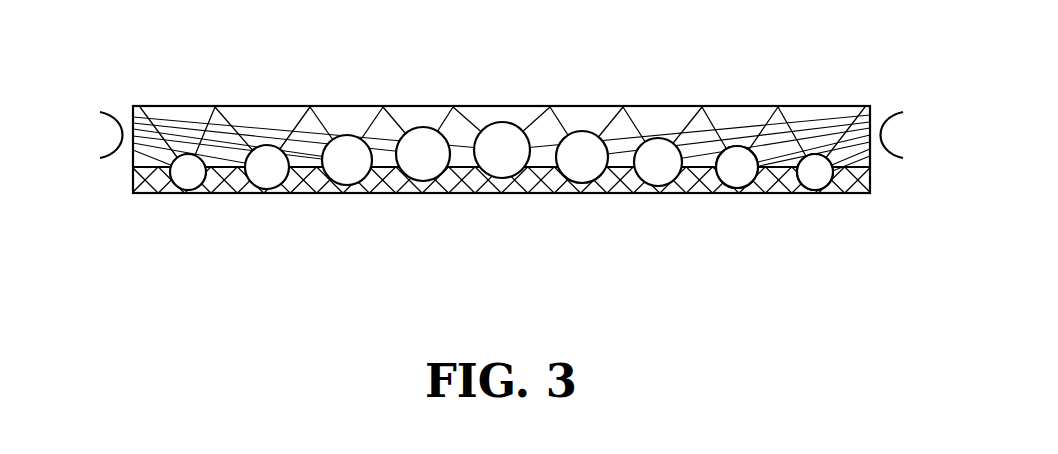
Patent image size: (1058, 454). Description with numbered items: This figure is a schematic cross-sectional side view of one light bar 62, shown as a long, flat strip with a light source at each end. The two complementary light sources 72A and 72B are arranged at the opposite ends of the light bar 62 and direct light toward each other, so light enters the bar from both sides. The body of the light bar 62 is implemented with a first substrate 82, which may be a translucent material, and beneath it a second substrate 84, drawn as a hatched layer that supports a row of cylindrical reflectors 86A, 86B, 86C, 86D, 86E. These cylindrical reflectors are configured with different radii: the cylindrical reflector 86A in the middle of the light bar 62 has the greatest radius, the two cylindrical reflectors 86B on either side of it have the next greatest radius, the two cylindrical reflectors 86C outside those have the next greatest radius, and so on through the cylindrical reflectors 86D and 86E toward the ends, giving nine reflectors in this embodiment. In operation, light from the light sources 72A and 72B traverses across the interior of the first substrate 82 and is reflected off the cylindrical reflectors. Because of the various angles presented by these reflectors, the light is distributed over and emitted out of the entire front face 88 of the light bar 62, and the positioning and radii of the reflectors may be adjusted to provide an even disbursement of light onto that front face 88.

The light bar 62 is at (245, 195).
The light source 72A is at (76, 160).
The light source 72B is at (916, 179).
The first substrate 82 is at (358, 120).
The second substrate 84 is at (325, 195).
The cylindrical reflector 86A is at (502, 163).
The cylindrical reflector 86B is at (580, 170).
The cylindrical reflector 86C is at (660, 175).
The cylindrical reflector 86D is at (737, 178).
The cylindrical reflector 86E is at (815, 182).
The front face 88 is at (667, 106).